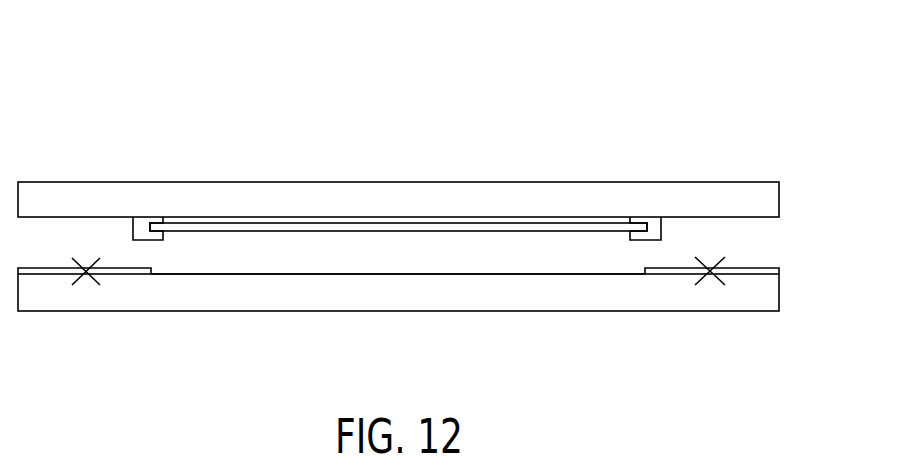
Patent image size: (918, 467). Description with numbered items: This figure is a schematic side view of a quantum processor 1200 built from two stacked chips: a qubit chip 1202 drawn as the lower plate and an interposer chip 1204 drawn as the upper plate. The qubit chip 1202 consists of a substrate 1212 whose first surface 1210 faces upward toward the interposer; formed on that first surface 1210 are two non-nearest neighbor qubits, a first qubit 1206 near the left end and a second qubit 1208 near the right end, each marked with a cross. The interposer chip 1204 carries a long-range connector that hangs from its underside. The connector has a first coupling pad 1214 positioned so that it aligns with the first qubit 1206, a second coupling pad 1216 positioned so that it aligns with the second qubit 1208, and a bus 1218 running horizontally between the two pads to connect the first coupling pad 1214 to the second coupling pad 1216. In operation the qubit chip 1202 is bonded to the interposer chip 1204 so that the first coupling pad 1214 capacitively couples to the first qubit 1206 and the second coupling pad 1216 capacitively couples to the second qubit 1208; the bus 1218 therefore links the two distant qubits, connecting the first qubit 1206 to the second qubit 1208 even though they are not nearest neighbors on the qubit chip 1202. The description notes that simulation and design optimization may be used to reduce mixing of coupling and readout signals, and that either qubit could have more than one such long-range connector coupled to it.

The quantum processor 1200 is at (719, 90).
The qubit chip 1202 is at (190, 343).
The interposer chip 1204 is at (360, 132).
The first qubit 1206 is at (86, 274).
The second qubit 1208 is at (710, 274).
The first surface 1210 is at (565, 275).
The substrate 1212 is at (779, 293).
The first coupling pad 1214 is at (133, 230).
The second coupling pad 1216 is at (662, 230).
The bus 1218 is at (442, 225).